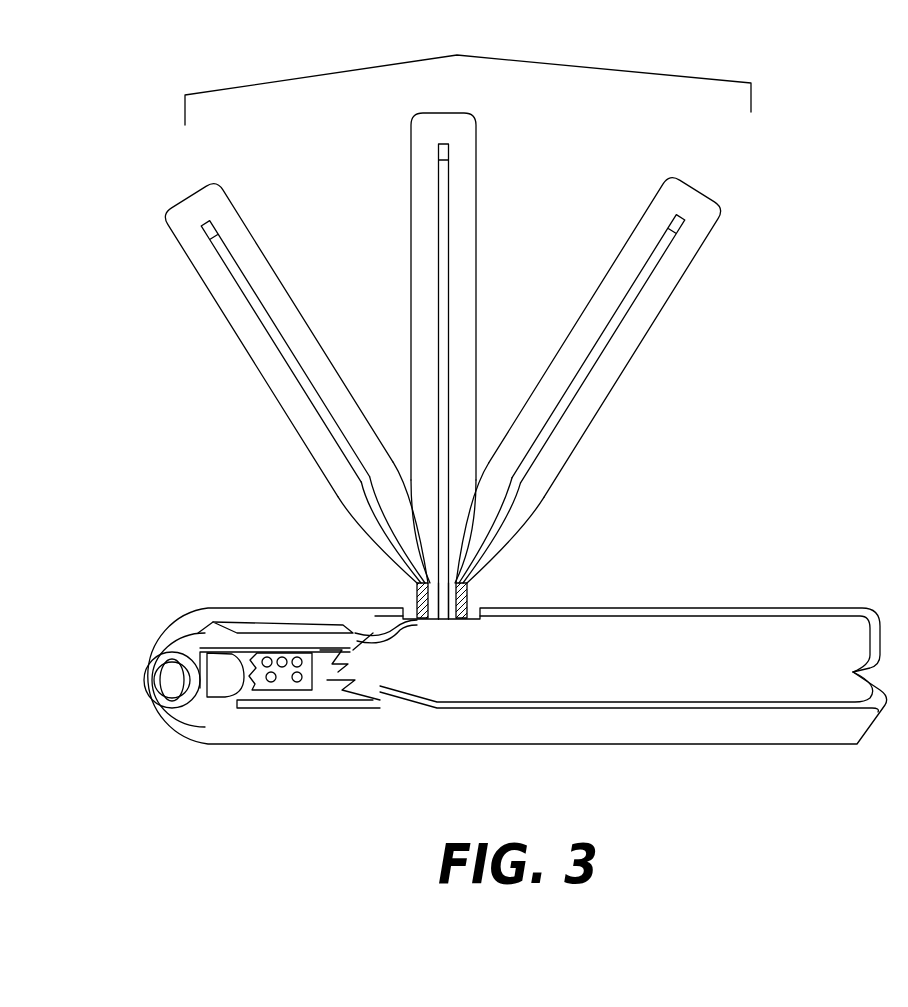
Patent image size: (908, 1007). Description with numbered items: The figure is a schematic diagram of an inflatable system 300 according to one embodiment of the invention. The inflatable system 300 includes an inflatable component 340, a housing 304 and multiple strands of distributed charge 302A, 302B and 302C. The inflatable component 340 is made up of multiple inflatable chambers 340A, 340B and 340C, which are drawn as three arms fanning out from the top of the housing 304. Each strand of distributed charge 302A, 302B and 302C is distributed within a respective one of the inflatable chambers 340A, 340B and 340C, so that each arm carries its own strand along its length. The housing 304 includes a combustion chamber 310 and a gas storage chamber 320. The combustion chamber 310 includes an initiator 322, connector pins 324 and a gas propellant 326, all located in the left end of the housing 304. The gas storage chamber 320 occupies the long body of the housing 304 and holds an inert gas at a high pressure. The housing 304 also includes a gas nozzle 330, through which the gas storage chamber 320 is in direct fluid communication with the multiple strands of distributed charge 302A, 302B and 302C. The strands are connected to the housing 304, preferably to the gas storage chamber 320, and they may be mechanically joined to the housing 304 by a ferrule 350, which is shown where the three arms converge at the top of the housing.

The inflatable system 300 is at (723, 460).
The inflatable component 340 is at (457, 55).
The inflatable chamber 340A is at (700, 180).
The inflatable chamber 340B is at (457, 113).
The inflatable chamber 340C is at (198, 180).
The strand of distributed charge 302A is at (598, 349).
The strand of distributed charge 302B is at (506, 381).
The strand of distributed charge 302C is at (285, 351).
The housing 304 is at (850, 605).
The ferrule 350 is at (468, 584).
The gas storage chamber 320 is at (760, 685).
The gas nozzle 330 is at (442, 620).
The combustion chamber 310 is at (280, 683).
The gas propellant 326 is at (283, 662).
The initiator 322 is at (222, 680).
The connector pins 324 is at (178, 684).